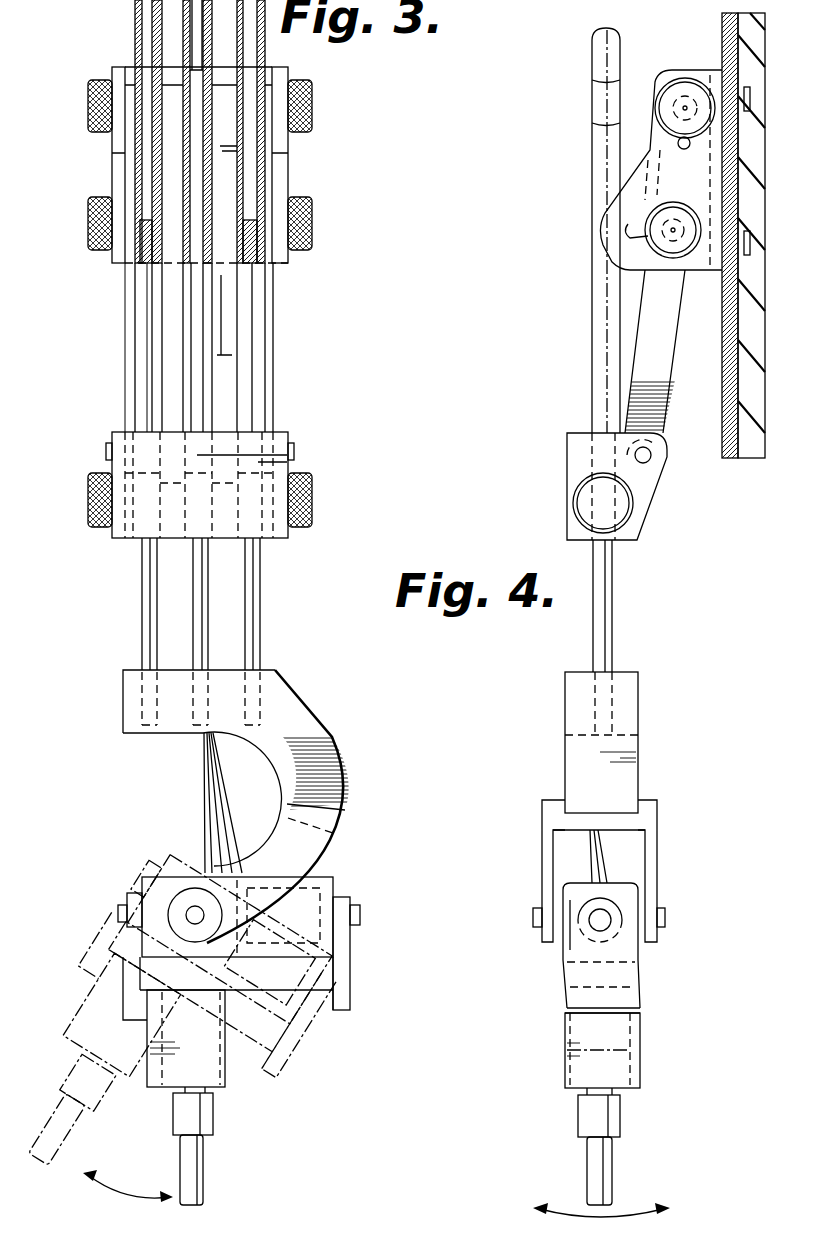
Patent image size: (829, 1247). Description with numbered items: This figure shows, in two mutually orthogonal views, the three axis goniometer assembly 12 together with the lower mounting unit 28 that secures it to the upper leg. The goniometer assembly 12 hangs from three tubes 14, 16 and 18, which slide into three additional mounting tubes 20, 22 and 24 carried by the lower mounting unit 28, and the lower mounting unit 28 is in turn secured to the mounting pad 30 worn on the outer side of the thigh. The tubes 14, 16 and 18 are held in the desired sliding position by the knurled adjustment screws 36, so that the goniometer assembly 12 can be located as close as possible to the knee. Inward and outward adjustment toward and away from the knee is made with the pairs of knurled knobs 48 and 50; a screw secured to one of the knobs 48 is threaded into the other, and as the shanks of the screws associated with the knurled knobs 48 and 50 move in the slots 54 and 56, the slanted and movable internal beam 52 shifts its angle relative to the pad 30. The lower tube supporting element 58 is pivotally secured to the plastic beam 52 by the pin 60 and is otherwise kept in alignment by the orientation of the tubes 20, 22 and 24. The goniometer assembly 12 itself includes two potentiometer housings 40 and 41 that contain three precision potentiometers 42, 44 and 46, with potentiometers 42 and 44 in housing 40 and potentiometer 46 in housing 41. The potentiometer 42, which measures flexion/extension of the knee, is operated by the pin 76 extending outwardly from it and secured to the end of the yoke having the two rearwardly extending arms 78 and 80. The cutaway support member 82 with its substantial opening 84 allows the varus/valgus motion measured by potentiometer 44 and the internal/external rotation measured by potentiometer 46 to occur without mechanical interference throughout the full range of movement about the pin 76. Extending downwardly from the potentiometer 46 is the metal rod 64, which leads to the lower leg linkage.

In FIG. 3, the goniometer assembly 12 is at (343, 882).
In FIG. 4, the goniometer assembly 12 is at (648, 887).
In FIG. 3, the tube 14 is at (148, 270).
In FIG. 3, the tube 16 is at (195, 100).
In FIG. 3, the tube 18 is at (247, 270).
In FIG. 4, the tube 18 is at (594, 625).
In FIG. 3, the mounting tube 20 is at (142, 393).
In FIG. 3, the mounting tube 22 is at (192, 325).
In FIG. 3, the mounting tube 24 is at (247, 413).
In FIG. 3, the lower mounting unit 28 is at (283, 376).
In FIG. 4, the lower mounting unit 28 is at (586, 351).
In FIG. 4, the mounting pad 30 is at (722, 42).
In FIG. 3, the knurled adjustment screws 36 is at (88, 500).
In FIG. 4, the knurled adjustment screws 36 is at (628, 537).
In FIG. 3, the potentiometer housing 40 is at (290, 1003).
In FIG. 4, the potentiometer housing 40 is at (638, 972).
In FIG. 3, the potentiometer housing 41 is at (180, 1047).
In FIG. 4, the potentiometer housing 41 is at (565, 1062).
In FIG. 3, the potentiometer 42 is at (140, 872).
In FIG. 3, the potentiometer 44 is at (325, 940).
In FIG. 4, the potentiometer 44 is at (563, 947).
In FIG. 3, the potentiometer 46 is at (92, 1027).
In FIG. 4, the potentiometer 46 is at (615, 1040).
In FIG. 3, the knurled knobs 48 is at (88, 215).
In FIG. 4, the knurled knobs 48 is at (700, 272).
In FIG. 3, the knurled knobs 50 is at (88, 102).
In FIG. 4, the knurled knobs 50 is at (660, 92).
In FIG. 3, the internal beam 52 is at (222, 334).
In FIG. 4, the internal beam 52 is at (657, 388).
In FIG. 4, the slot 54 is at (630, 233).
In FIG. 4, the slot 56 is at (676, 143).
In FIG. 4, the lower tube supporting element 58 is at (578, 448).
In FIG. 4, the pin 60 is at (648, 462).
In FIG. 3, the metal rod 64 is at (75, 1135).
In FIG. 4, the metal rod 64 is at (600, 1177).
In FIG. 3, the pin 76 is at (194, 905).
In FIG. 4, the pin 76 is at (666, 920).
In FIG. 3, the arm 78 is at (310, 838).
In FIG. 4, the arm 78 is at (547, 838).
In FIG. 4, the arm 80 is at (652, 843).
In FIG. 3, the support member 82 is at (298, 733).
In FIG. 3, the opening 84 is at (257, 777).
In FIG. 4, the opening 84 is at (592, 862).